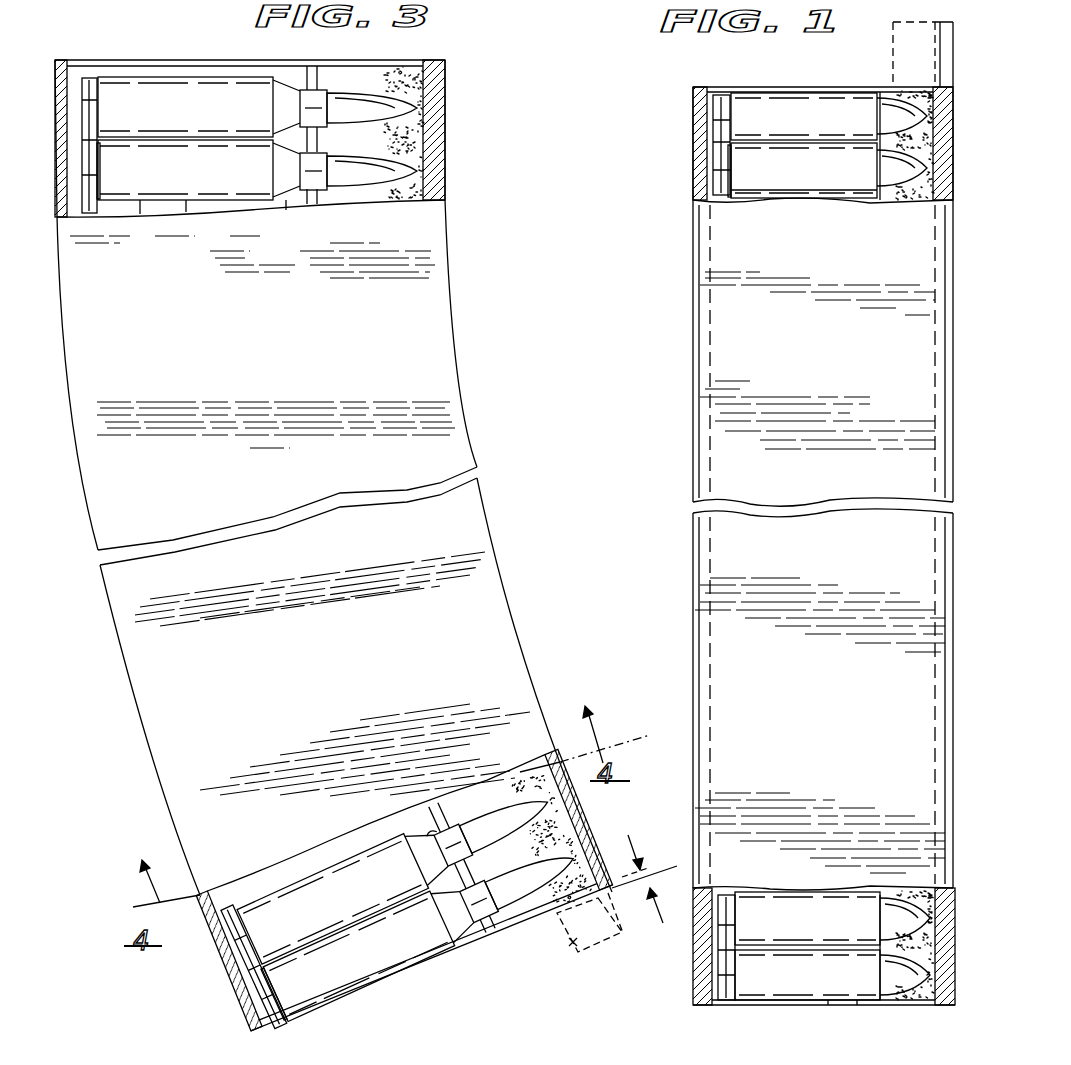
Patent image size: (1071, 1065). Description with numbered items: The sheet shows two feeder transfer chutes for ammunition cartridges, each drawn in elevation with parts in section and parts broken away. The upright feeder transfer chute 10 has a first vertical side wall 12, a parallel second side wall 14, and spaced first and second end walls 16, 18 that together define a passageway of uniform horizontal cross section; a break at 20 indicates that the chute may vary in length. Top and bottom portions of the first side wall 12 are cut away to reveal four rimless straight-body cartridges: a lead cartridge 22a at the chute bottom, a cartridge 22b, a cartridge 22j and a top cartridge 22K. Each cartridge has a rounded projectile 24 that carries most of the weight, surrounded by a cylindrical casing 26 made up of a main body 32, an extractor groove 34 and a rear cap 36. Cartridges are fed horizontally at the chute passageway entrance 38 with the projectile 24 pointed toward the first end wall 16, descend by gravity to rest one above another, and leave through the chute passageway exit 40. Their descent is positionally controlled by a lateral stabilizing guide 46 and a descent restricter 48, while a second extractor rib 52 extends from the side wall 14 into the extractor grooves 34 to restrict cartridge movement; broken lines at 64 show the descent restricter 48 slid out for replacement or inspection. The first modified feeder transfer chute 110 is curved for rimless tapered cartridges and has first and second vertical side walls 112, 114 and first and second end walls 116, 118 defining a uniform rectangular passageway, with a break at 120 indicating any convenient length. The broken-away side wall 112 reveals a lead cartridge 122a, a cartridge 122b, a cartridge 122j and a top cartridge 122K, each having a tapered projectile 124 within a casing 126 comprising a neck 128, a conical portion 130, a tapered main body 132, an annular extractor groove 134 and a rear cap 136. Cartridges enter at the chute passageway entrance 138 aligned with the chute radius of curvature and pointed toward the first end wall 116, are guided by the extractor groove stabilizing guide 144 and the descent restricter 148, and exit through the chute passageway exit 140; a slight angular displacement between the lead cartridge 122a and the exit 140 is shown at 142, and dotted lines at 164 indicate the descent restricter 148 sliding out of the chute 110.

In FIG. 1, the feeder transfer chute 10 is at (823, 488).
In FIG. 1, the first vertical side wall 12 is at (735, 297).
In FIG. 1, the second side wall 14 is at (883, 88).
In FIG. 1, the first end wall 16 is at (947, 207).
In FIG. 1, the second end wall 18 is at (692, 100).
In FIG. 1, the break 20 is at (868, 524).
In FIG. 1, the top cartridge 22K is at (829, 116).
In FIG. 1, the cartridge 22j is at (829, 170).
In FIG. 1, the cartridge 22b is at (832, 918).
In FIG. 1, the lead cartridge 22a is at (832, 975).
In FIG. 1, the rounded projectile 24 is at (895, 172).
In FIG. 1, the casing 26 is at (815, 222).
In FIG. 1, the main body 32 is at (757, 182).
In FIG. 1, the extractor groove 34 is at (727, 172).
In FIG. 1, the rear cap 36 is at (713, 155).
In FIG. 1, the chute passageway entrance 38 is at (770, 90).
In FIG. 1, the chute passageway exit 40 is at (828, 1002).
In FIG. 1, the lateral stabilizing guide 46 is at (857, 1007).
In FIG. 1, the descent restricter 48 is at (918, 1007).
In FIG. 1, the second extractor rib 52 is at (732, 1000).
In FIG. 1, the broken lines 64 is at (922, 32).
In FIG. 3, the feeder transfer chute 110 is at (266, 305).
In FIG. 3, the first vertical side wall 112 is at (440, 378).
In FIG. 3, the second vertical side wall 114 is at (338, 80).
In FIG. 3, the first end wall 116 is at (445, 157).
In FIG. 3, the second end wall 118 is at (56, 62).
In FIG. 3, the break 120 is at (408, 503).
In FIG. 3, the top cartridge 122K is at (178, 105).
In FIG. 3, the cartridge 122j is at (237, 160).
In FIG. 3, the cartridge 122b is at (300, 887).
In FIG. 3, the lead cartridge 122a is at (383, 940).
In FIG. 3, the tapered projectile 124 is at (385, 198).
In FIG. 3, the casing 126 is at (147, 215).
In FIG. 3, the neck 128 is at (288, 177).
In FIG. 3, the conical portion 130 is at (290, 205).
In FIG. 3, the tapered main body 132 is at (187, 205).
In FIG. 3, the annular extractor groove 134 is at (100, 164).
In FIG. 3, the rear cap 136 is at (60, 215).
In FIG. 3, the chute passageway entrance 138 is at (237, 77).
In FIG. 3, the chute passageway exit 140 is at (428, 960).
In FIG. 3, the angular displacement 142 is at (647, 920).
In FIG. 3, the extractor groove stabilizing guide 144 is at (145, 1064).
In FIG. 3, the descent restricter 148 is at (410, 67).
In FIG. 3, the dotted lines 164 is at (565, 948).